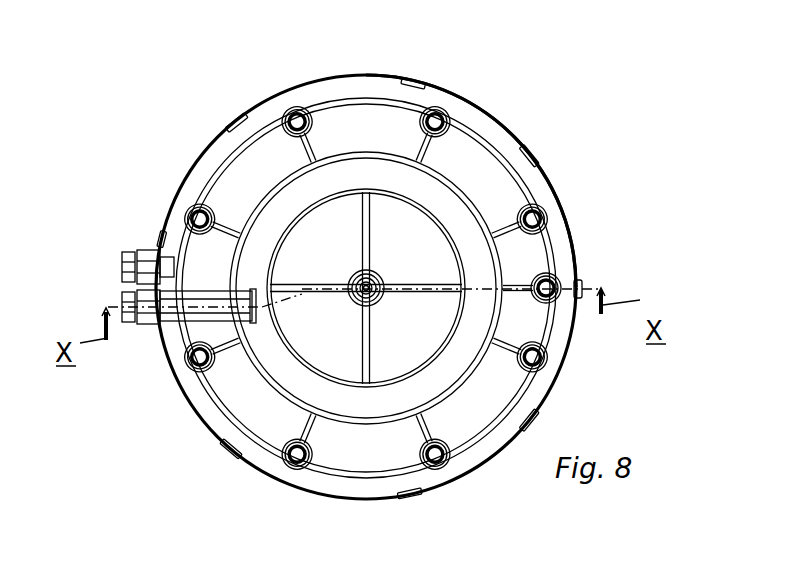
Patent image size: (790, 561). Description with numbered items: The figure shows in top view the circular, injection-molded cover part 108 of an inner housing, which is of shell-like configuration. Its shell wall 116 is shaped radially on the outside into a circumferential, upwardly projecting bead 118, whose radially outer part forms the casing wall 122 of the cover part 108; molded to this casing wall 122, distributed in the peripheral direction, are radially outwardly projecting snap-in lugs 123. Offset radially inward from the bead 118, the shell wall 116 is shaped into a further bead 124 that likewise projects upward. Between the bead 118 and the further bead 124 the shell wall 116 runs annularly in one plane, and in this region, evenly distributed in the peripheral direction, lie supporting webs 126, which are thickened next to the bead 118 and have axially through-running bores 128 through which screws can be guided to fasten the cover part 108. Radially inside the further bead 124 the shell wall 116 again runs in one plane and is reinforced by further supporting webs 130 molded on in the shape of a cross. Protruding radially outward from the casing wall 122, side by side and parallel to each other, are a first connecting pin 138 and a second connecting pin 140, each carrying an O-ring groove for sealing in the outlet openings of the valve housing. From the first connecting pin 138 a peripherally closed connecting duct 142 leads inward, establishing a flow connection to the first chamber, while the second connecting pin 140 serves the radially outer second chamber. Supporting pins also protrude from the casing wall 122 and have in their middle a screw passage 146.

The cover part 108 is at (190, 158).
The shell wall 116 is at (495, 128).
The bead 118 is at (533, 187).
The casing wall 122 is at (573, 250).
The snap-in lugs 123 is at (537, 152).
The further bead 124 is at (361, 170).
The supporting webs 126 is at (545, 233).
The bores 128 is at (543, 212).
The further supporting webs 130 is at (357, 343).
The first connecting pin 138 is at (147, 316).
The second connecting pin 140 is at (134, 250).
The connecting duct 142 is at (237, 322).
The screw passage 146 is at (368, 306).